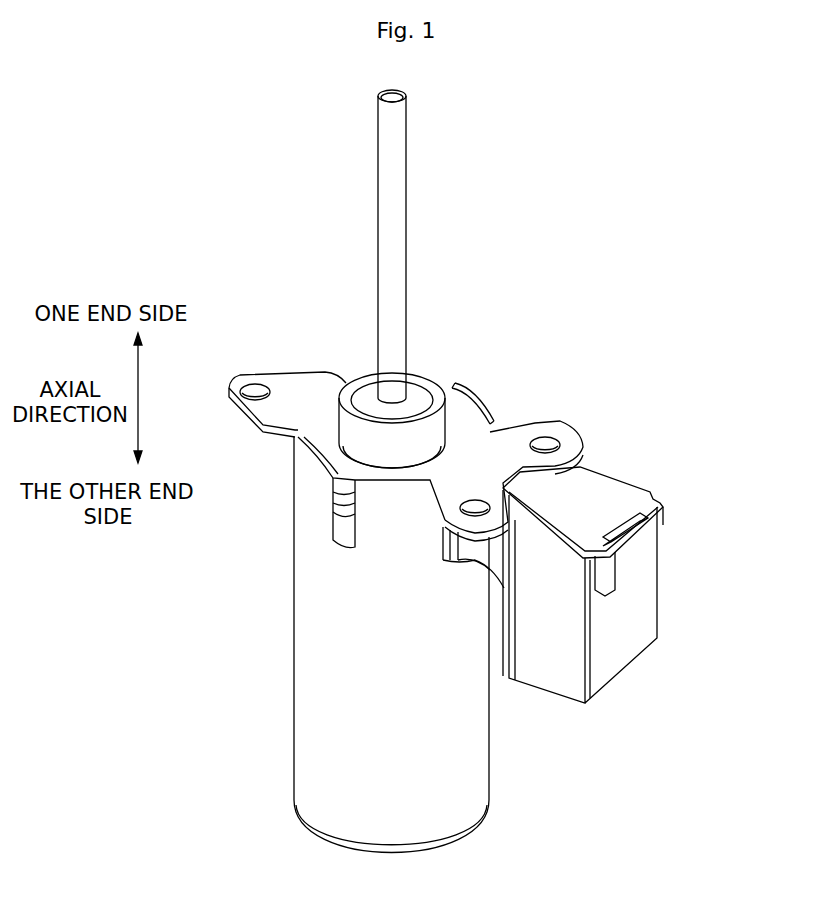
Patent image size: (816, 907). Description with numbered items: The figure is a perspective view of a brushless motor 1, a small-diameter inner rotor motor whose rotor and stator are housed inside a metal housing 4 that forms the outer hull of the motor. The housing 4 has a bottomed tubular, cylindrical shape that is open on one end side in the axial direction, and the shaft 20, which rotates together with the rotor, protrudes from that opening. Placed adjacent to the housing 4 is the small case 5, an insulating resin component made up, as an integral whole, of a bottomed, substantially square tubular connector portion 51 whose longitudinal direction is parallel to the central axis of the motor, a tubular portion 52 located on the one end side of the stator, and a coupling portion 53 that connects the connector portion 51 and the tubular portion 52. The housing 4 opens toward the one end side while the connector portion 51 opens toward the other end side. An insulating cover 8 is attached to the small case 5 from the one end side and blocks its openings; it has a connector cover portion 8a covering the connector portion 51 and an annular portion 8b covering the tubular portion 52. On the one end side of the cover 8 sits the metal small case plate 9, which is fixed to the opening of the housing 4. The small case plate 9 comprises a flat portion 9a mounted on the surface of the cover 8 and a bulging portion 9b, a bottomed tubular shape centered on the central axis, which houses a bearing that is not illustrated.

The brushless motor 1 is at (208, 146).
The shaft 20 is at (384, 181).
The housing 4 is at (305, 683).
The small case plate 9 is at (435, 383).
The flat portion 9a is at (515, 442).
The bulging portion 9b is at (363, 379).
The tubular portion 52 is at (330, 533).
The annular portion 8b is at (333, 495).
The coupling portion 53 is at (474, 566).
The small case 5 is at (660, 600).
The cover 8 is at (596, 467).
The connector cover portion 8a is at (627, 491).
The connector portion 51 is at (620, 665).